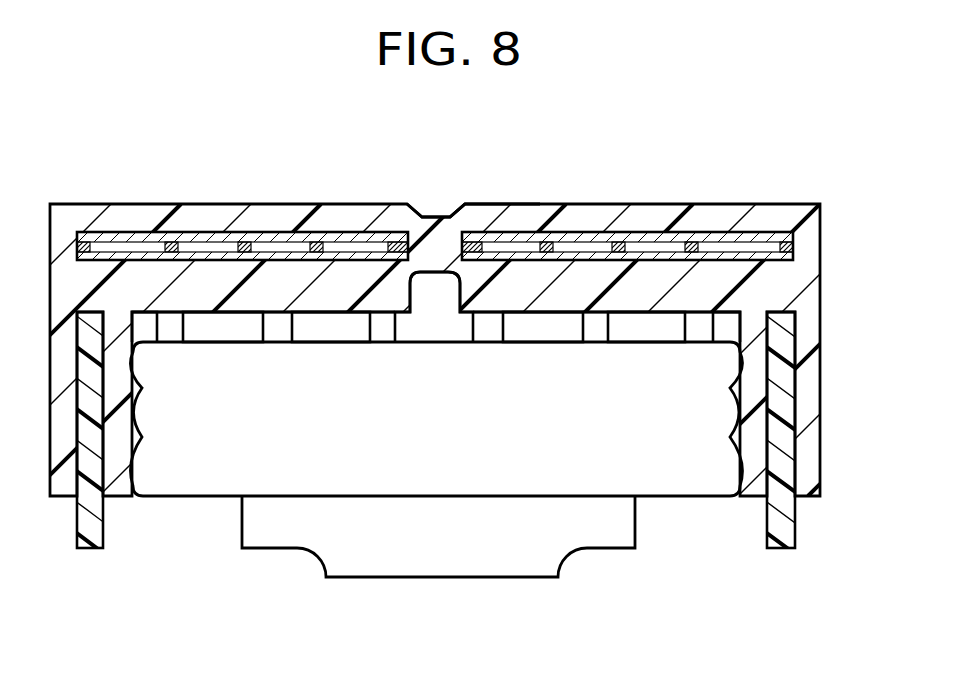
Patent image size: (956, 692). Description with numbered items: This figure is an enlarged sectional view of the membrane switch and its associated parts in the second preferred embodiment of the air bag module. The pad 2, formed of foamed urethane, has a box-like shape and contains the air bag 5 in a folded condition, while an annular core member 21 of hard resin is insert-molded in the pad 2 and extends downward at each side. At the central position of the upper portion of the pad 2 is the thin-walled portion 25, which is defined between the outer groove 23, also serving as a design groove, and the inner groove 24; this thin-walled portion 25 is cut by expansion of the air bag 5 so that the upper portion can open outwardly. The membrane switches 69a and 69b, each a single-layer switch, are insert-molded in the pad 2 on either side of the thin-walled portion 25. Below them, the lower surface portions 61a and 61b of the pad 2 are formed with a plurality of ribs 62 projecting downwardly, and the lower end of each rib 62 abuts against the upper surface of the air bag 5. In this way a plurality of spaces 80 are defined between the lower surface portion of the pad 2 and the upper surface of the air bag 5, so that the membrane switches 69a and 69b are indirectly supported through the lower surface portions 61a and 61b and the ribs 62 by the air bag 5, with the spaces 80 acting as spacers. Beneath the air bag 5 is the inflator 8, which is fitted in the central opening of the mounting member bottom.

The pad 2 is at (573, 207).
The thin-walled portion 25 is at (442, 217).
The outer groove 23 is at (457, 207).
The membrane switch 69a is at (146, 240).
The membrane switch 69b is at (713, 242).
The lower surface portion 61a is at (192, 290).
The lower surface portion 61b is at (705, 340).
The rib 62 is at (286, 330).
The space 80 is at (346, 336).
The inner groove 24 is at (438, 279).
The air bag 5 is at (700, 483).
The inflator 8 is at (613, 540).
The core member 21 is at (787, 443).